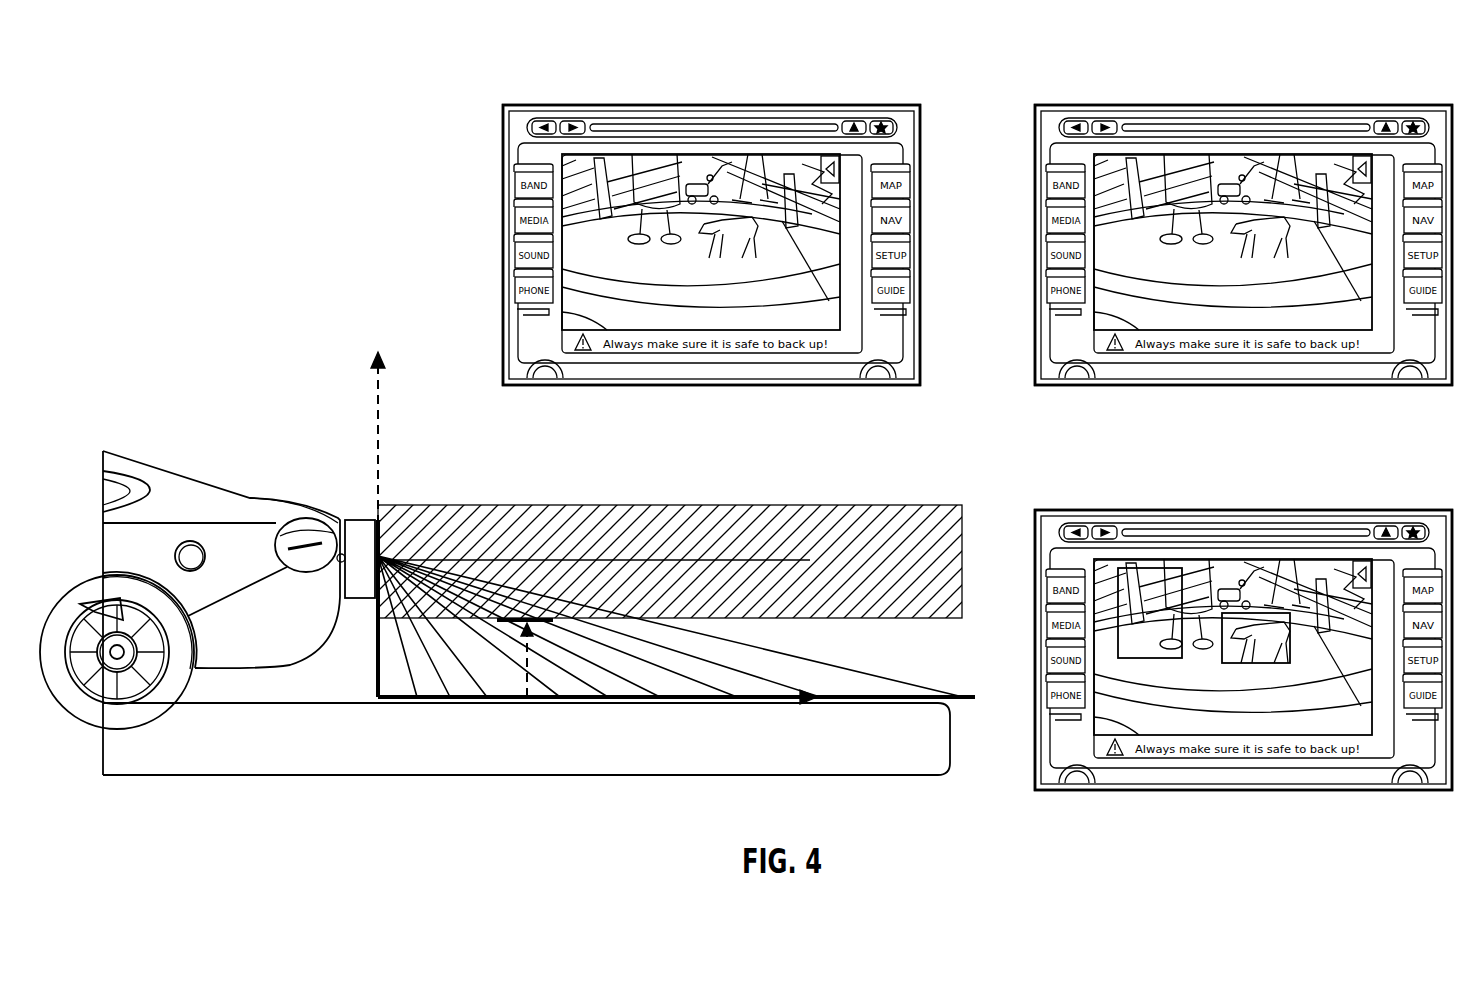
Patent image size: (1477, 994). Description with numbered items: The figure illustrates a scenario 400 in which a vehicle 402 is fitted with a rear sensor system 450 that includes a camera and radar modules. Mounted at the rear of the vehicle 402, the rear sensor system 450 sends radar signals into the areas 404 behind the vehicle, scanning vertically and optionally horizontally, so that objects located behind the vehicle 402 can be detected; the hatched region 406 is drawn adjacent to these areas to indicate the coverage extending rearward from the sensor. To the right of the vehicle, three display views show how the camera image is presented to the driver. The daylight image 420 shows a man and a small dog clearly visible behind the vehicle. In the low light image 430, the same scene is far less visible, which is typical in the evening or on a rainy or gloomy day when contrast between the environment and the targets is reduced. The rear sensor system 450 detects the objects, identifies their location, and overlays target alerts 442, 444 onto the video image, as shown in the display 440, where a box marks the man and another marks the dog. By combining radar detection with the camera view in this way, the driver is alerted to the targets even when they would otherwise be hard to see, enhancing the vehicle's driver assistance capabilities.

The scenario 400 is at (207, 36).
The vehicle 402 is at (266, 488).
The areas 404 is at (839, 655).
The detection zone 406 is at (596, 556).
The daylight image 420 is at (577, 104).
The low light image 430 is at (1109, 104).
The display 440 is at (1110, 509).
The target alert 442 is at (1145, 660).
The target alert 444 is at (1247, 665).
The rear sensor system 450 is at (355, 514).